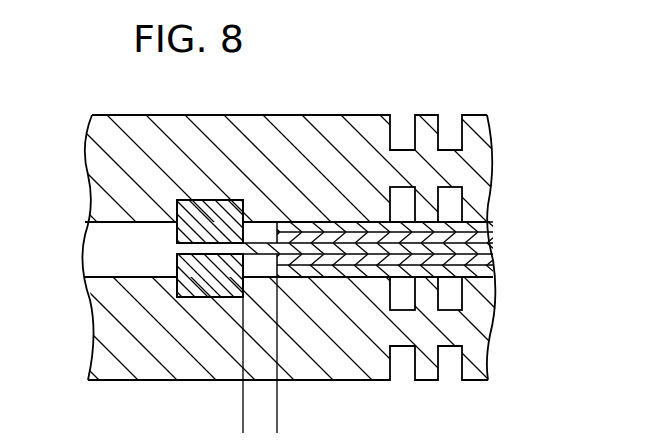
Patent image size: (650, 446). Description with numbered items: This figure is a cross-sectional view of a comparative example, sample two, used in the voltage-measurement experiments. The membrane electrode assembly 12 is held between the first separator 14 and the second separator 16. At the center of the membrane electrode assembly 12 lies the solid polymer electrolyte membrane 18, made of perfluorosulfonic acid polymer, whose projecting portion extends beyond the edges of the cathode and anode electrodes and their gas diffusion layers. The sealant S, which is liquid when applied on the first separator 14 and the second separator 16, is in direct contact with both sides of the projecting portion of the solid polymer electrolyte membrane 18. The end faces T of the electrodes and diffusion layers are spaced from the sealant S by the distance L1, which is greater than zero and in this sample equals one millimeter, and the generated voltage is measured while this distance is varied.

The membrane electrode assembly 12 is at (502, 220).
The first separator 14 is at (470, 171).
The second separator 16 is at (477, 317).
The solid polymer electrolyte membrane 18 is at (177, 248).
The sealant S is at (177, 233).
The end faces T is at (277, 224).
The distance L1 is at (200, 427).